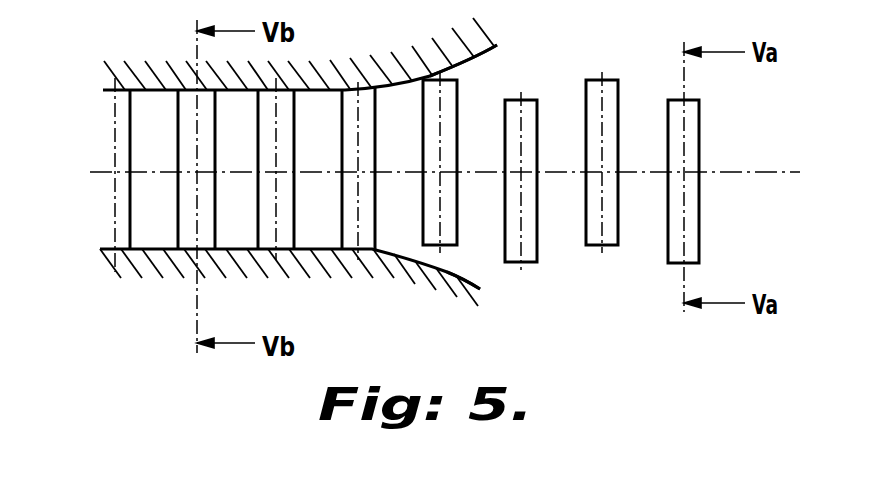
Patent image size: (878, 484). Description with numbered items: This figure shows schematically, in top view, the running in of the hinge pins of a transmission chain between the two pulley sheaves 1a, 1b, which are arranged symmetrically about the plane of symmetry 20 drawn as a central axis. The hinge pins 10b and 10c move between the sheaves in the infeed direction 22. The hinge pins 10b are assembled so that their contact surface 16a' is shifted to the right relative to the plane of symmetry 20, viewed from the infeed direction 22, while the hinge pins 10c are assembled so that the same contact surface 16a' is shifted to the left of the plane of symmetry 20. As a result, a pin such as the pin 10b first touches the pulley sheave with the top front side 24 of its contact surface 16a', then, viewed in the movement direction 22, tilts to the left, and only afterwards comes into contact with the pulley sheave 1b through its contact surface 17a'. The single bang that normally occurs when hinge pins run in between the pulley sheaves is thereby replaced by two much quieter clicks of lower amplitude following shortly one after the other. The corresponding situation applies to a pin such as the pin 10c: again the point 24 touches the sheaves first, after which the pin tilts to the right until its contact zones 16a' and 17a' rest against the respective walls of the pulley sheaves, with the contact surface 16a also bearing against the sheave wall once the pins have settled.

The pulley sheave 1a is at (405, 68).
The pulley sheave 1b is at (415, 277).
The hinge pin 10b is at (450, 99).
The hinge pin 10c is at (187, 240).
The contact surface 16a is at (723, 278).
The contact surface 16a' is at (577, 171).
The contact surface 17a' is at (594, 215).
The plane of symmetry 20 is at (749, 171).
The infeed direction 22 is at (783, 112).
The top front side 24 is at (487, 46).